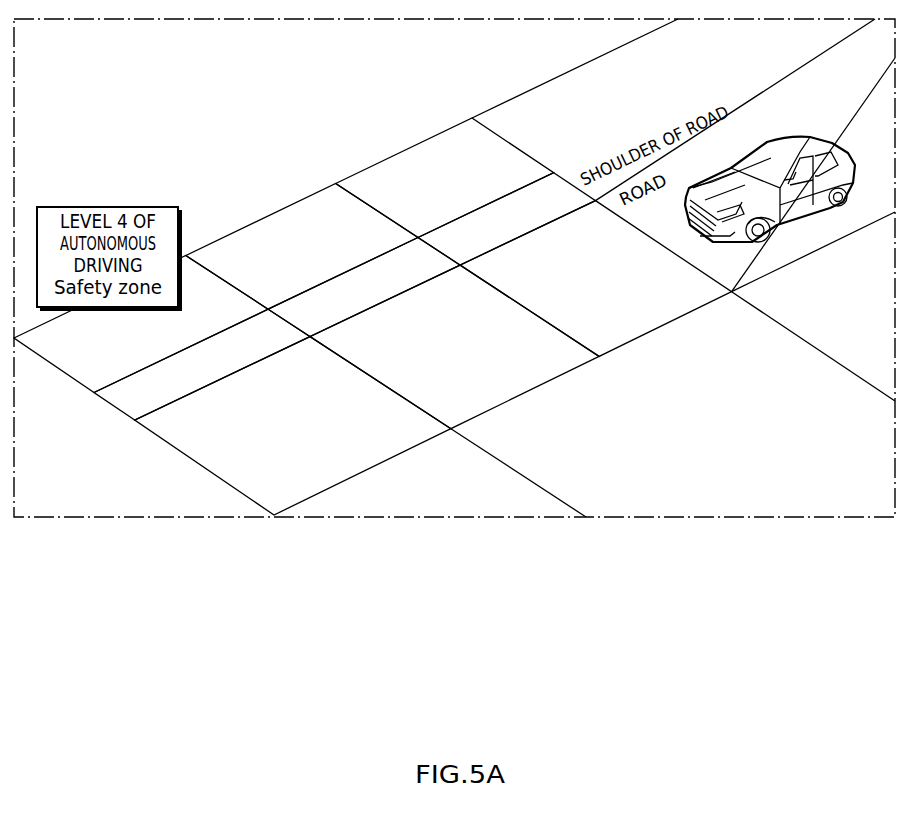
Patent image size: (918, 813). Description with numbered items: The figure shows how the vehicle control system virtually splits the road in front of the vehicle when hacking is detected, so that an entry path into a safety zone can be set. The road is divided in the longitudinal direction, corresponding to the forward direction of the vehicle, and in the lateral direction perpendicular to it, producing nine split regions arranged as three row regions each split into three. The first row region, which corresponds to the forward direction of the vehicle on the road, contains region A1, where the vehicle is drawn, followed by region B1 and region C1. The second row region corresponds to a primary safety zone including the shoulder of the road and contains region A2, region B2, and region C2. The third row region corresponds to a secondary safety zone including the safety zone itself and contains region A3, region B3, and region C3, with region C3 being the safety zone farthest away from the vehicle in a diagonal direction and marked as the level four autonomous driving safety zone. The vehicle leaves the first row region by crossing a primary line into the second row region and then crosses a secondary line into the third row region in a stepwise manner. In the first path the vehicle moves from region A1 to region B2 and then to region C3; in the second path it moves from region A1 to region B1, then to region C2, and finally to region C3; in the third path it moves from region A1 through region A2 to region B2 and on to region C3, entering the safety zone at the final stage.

The region A1 is at (595, 279).
The region A2 is at (507, 219).
The region A3 is at (445, 178).
The region B1 is at (454, 347).
The region B2 is at (364, 287).
The region B3 is at (302, 247).
The region C1 is at (293, 426).
The region C2 is at (202, 364).
The region C3 is at (141, 324).